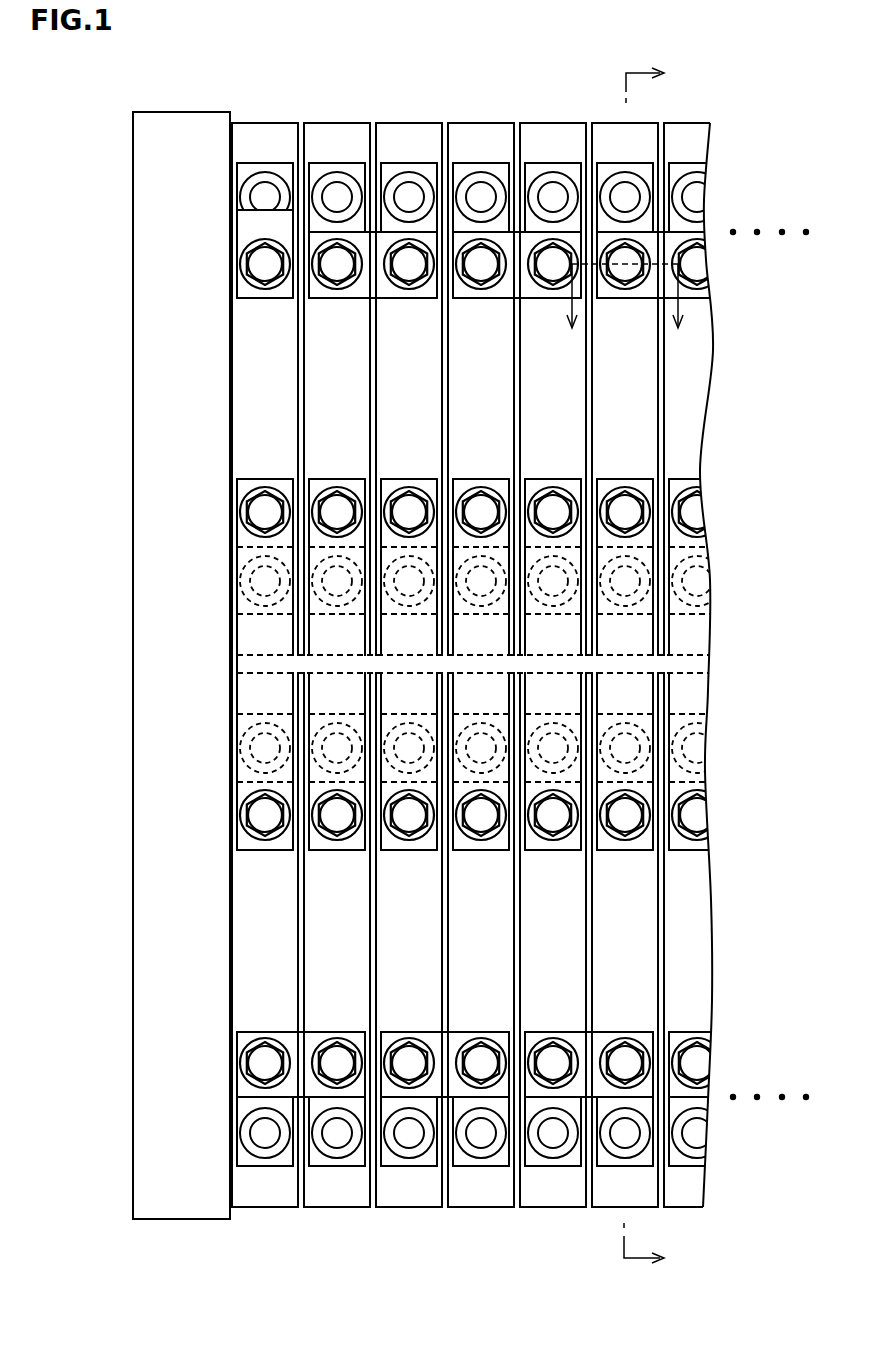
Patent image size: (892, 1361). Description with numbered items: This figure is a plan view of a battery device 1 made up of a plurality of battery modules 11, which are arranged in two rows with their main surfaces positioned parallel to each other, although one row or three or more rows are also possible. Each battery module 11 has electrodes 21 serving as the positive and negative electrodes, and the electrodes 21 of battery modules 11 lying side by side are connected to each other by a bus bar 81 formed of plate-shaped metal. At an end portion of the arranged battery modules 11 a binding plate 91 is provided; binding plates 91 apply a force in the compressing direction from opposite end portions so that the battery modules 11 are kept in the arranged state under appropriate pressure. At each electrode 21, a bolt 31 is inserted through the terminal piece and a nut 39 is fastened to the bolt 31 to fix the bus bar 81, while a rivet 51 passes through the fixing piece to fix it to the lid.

The battery device 1 is at (551, 1236).
The battery module 11 is at (268, 135).
The electrode 21 is at (246, 170).
The bolt 31 is at (263, 815).
The nut 39 is at (245, 803).
The rivet 51 is at (264, 197).
The bus bar 81 is at (370, 284).
The binding plate 91 is at (155, 229).